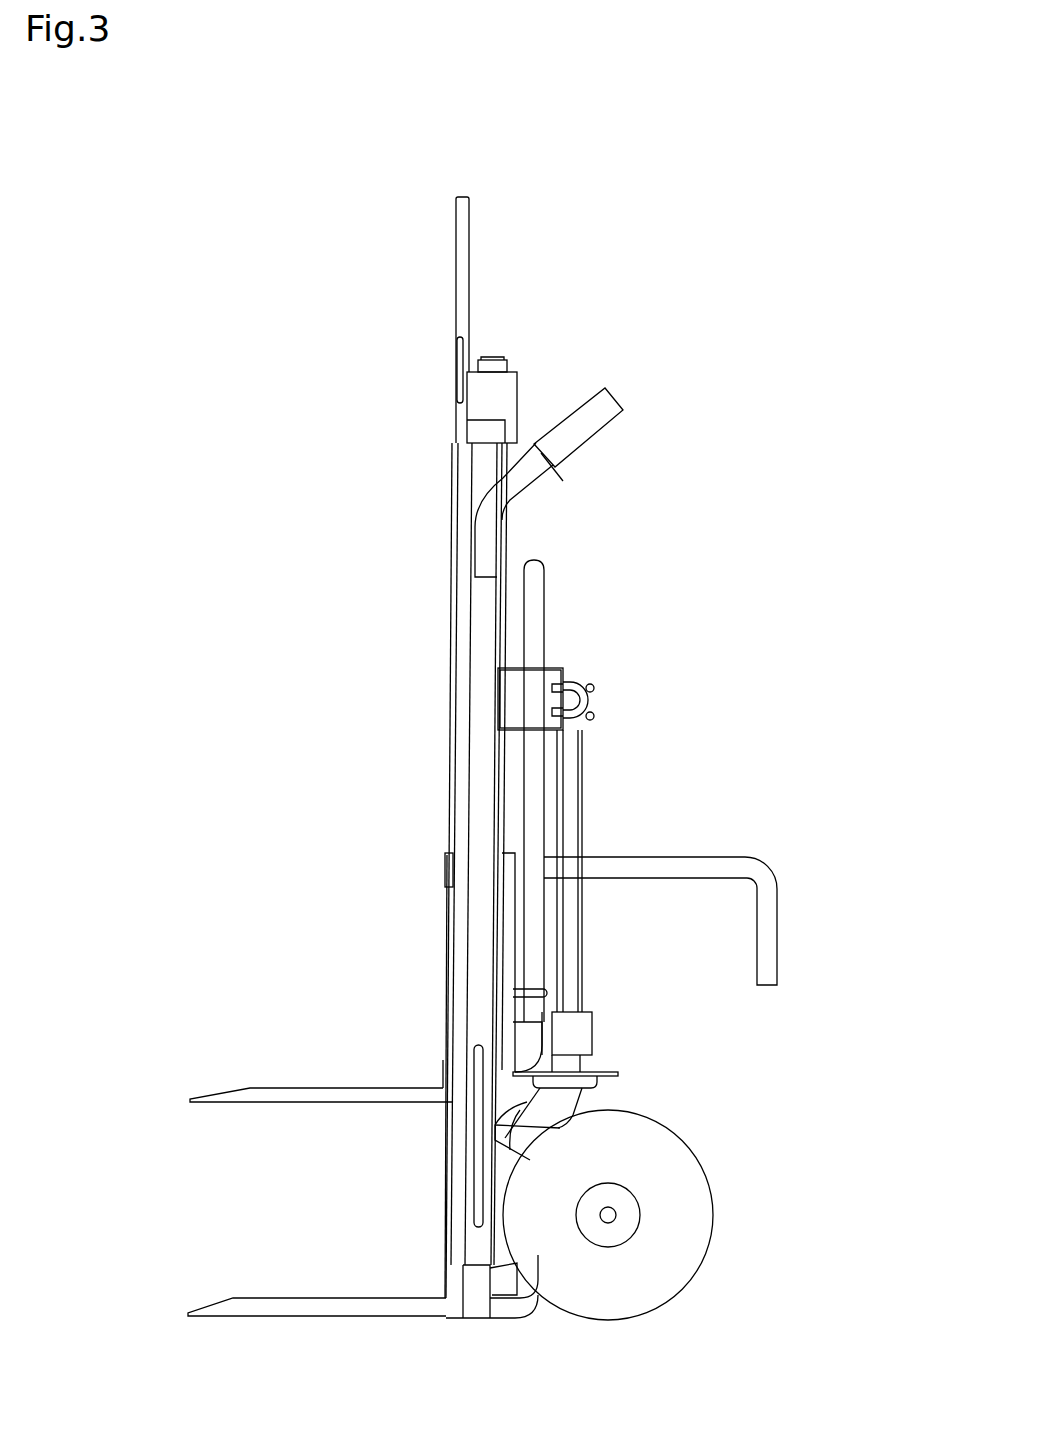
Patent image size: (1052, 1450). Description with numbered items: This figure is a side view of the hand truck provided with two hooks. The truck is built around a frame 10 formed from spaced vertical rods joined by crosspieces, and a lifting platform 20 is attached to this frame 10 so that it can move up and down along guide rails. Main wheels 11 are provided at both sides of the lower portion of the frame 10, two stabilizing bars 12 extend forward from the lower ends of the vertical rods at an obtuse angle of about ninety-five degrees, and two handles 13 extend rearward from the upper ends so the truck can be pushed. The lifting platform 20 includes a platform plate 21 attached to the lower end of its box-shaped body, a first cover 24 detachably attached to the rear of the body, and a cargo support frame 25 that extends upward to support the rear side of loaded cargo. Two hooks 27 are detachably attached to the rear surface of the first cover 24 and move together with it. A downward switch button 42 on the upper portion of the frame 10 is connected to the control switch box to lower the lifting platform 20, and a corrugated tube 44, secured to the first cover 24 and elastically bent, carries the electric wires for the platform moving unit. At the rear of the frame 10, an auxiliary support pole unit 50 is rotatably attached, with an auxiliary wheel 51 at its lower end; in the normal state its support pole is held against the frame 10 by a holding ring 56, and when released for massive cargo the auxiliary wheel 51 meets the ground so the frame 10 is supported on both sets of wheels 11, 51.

The frame 10 is at (480, 617).
The wheels 11 is at (700, 1210).
The stabilizing bars 12 is at (338, 1300).
The handles 13 is at (600, 418).
The lifting platform 20 is at (447, 930).
The platform plate 21 is at (272, 1090).
The first cover 24 is at (508, 952).
The cargo support frame 25 is at (463, 245).
The hooks 27 is at (770, 928).
The downward switch button 42 is at (500, 357).
The corrugated tube 44 is at (530, 643).
The auxiliary support pole unit 50 is at (577, 798).
The auxiliary wheel 51 is at (578, 1140).
The holding ring 56 is at (577, 1040).